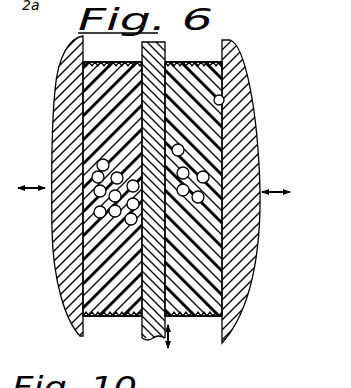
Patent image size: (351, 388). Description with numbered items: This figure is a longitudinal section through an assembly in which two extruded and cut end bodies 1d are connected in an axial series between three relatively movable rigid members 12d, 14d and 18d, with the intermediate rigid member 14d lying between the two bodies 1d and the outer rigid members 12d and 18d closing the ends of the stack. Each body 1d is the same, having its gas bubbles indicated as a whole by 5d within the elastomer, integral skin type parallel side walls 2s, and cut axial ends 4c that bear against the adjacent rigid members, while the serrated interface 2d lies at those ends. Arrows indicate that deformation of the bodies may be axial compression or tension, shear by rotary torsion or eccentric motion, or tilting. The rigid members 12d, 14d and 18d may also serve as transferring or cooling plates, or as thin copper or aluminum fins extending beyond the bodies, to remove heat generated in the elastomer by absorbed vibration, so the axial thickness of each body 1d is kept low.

The extruded and cut end body 1d is at (122, 59).
The resilient friction pad 2d is at (115, 318).
The integral skin type parallel side wall 2s is at (88, 74).
The cut axial end 4c is at (100, 128).
The bubbles 5d is at (92, 169).
The rigid member 12d is at (57, 265).
The rigid member 14d is at (158, 42).
The rigid member 18d is at (241, 284).